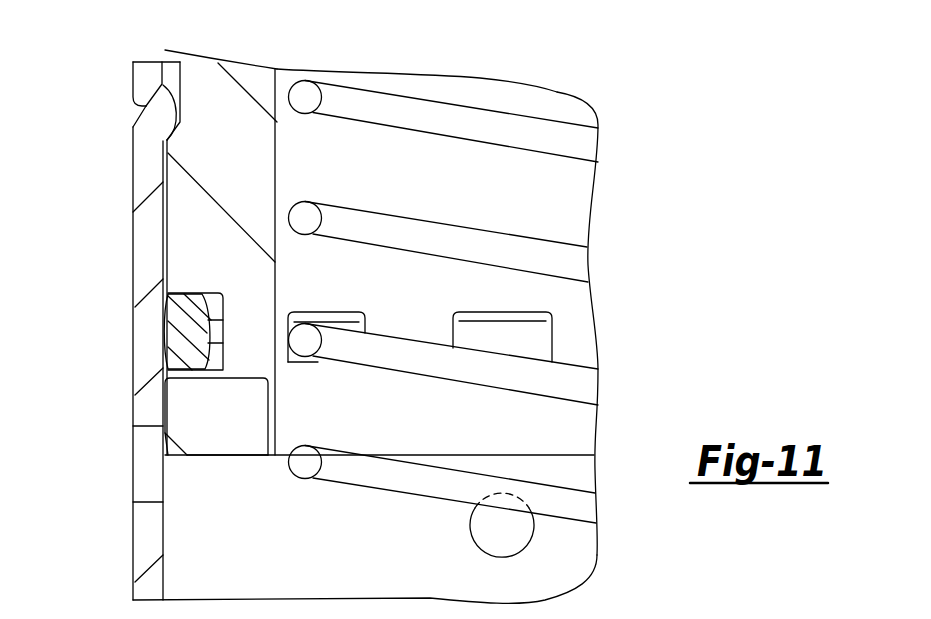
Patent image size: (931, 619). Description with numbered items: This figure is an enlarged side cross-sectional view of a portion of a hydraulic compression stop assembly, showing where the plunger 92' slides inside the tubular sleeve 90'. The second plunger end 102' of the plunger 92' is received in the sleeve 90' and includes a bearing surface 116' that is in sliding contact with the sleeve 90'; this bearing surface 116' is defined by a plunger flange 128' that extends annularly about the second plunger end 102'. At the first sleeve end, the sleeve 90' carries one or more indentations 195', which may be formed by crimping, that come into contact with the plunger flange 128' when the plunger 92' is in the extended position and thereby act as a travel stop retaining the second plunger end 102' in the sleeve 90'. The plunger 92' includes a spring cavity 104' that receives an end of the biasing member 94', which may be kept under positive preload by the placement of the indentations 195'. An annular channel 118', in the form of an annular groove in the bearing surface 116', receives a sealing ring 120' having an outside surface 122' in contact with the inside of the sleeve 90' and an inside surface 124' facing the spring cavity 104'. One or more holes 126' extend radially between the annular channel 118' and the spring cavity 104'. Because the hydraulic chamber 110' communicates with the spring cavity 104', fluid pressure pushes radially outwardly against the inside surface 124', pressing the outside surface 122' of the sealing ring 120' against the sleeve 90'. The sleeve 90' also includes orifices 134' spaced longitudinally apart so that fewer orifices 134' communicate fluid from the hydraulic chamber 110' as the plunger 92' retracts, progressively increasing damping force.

The sleeve 90' is at (121, 331).
The plunger 92' is at (221, 235).
The biasing member 94' is at (444, 126).
The second plunger end 102' is at (379, 495).
The spring cavity 104' is at (466, 312).
The hydraulic chamber 110' is at (428, 551).
The bearing surface 116' is at (172, 416).
The annular channel 118' is at (247, 416).
The sealing ring 120' is at (187, 280).
The outside surface 122' is at (144, 332).
The inside surface 124' is at (249, 316).
The holes 126' is at (477, 337).
The plunger flange 128' is at (261, 87).
The orifices 134' is at (117, 464).
The indentations 195' is at (102, 94).